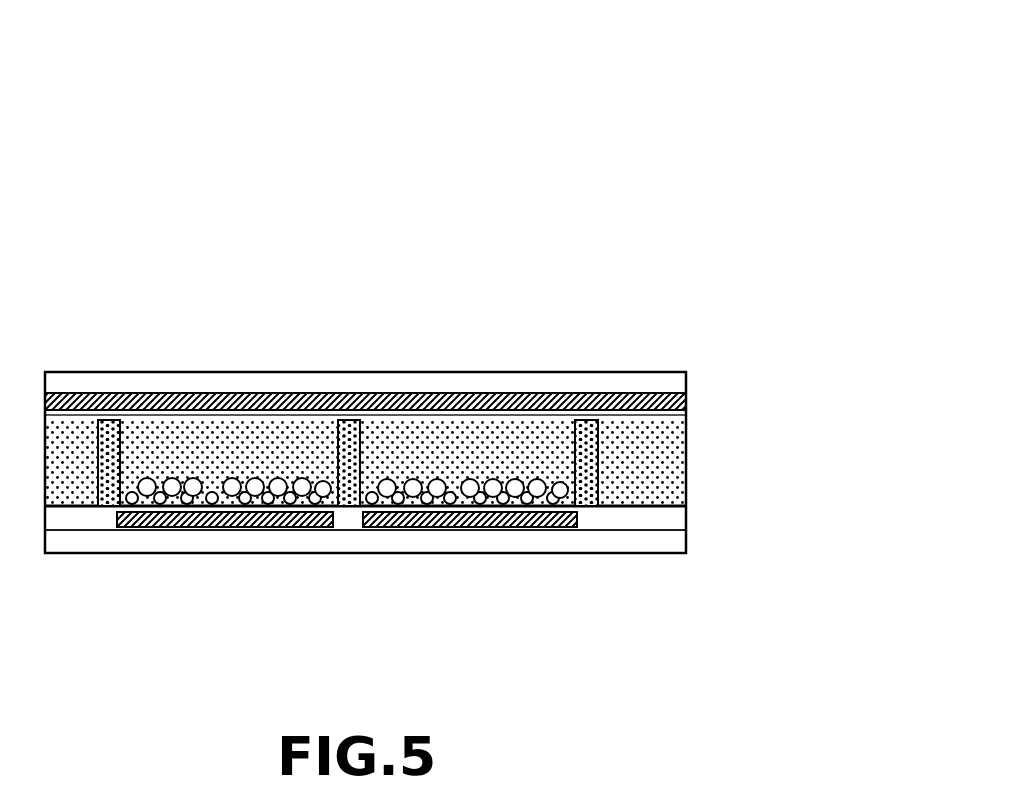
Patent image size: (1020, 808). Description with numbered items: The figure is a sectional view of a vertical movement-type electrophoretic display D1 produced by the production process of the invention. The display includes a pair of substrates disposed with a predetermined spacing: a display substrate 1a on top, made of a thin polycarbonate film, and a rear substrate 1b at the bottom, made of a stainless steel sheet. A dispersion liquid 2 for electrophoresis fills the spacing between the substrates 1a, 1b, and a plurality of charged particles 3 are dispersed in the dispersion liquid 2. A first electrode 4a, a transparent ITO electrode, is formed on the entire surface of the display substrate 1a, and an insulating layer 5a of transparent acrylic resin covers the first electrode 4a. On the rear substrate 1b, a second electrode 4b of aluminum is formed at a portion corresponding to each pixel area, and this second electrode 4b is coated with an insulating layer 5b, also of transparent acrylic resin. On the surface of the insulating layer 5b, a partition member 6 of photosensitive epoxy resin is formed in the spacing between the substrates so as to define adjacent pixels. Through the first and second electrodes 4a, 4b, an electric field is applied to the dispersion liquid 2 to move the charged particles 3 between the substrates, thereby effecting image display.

The electrophoretic display D1 is at (673, 120).
The display substrate 1a is at (428, 383).
The rear substrate 1b is at (397, 543).
The dispersion liquid 2 is at (170, 445).
The charged particles 3 is at (280, 488).
The first electrode 4a is at (318, 395).
The second electrode 4b is at (530, 530).
The insulating layer 5a is at (672, 418).
The insulating layer 5b is at (648, 520).
The partition member 6 is at (590, 458).